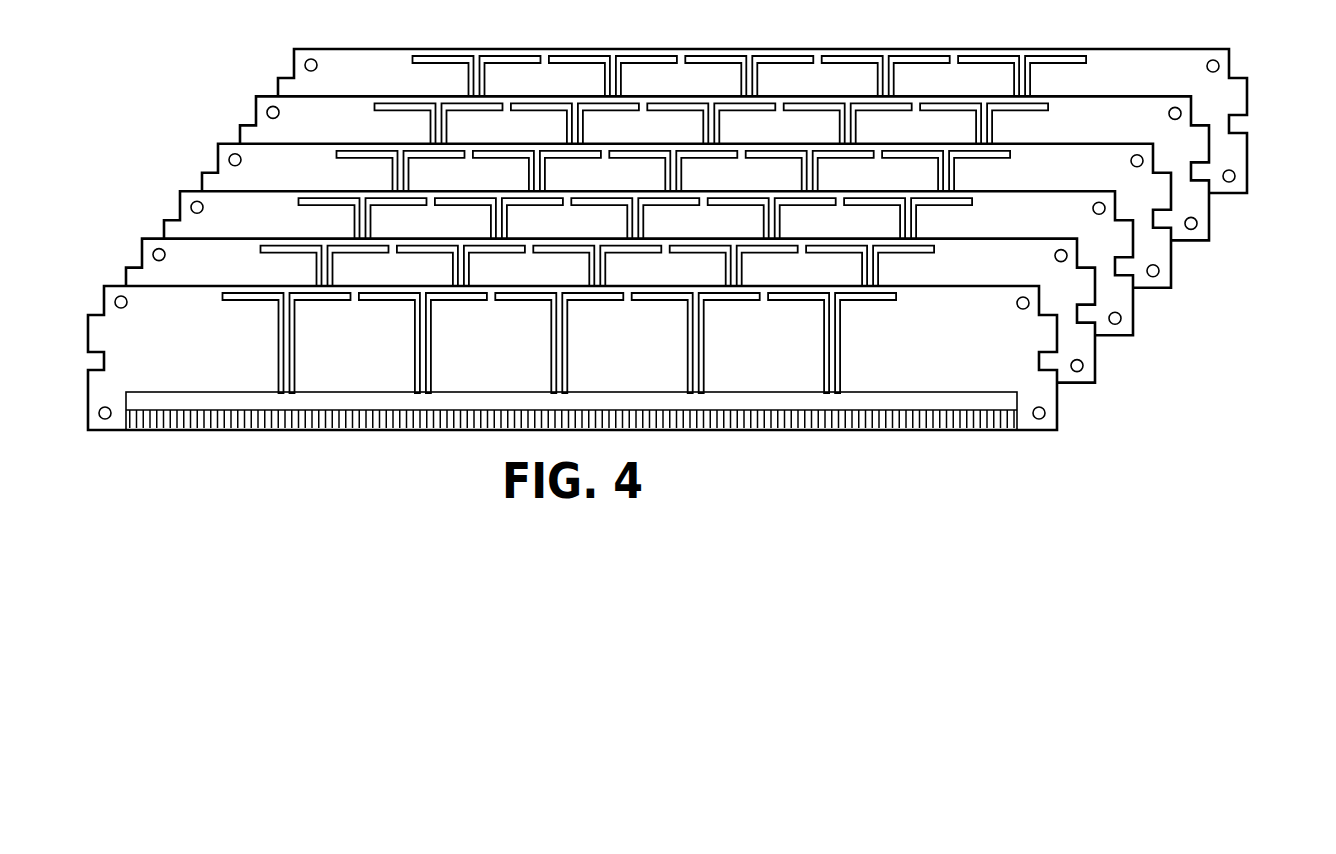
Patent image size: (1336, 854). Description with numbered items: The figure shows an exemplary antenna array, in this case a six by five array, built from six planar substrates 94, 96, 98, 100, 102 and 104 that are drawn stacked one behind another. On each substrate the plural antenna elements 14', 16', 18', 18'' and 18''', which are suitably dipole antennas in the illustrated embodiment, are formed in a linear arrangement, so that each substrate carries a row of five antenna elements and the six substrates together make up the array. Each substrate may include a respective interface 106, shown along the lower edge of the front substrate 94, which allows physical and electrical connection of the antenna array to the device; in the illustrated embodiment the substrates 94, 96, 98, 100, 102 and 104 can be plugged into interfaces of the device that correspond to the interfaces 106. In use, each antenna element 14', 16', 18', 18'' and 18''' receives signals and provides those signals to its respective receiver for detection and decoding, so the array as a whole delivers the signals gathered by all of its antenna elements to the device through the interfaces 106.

The antenna element 14' is at (296, 343).
The antenna element 16' is at (432, 343).
The antenna element 18' is at (568, 343).
The antenna element 18'' is at (707, 343).
The antenna element 18''' is at (846, 343).
The planar substrate 94 is at (606, 391).
The planar substrate 96 is at (644, 311).
The planar substrate 98 is at (682, 263).
The planar substrate 100 is at (953, 127).
The planar substrate 102 is at (953, 127).
The planar substrate 104 is at (953, 127).
The interface 106 is at (571, 444).